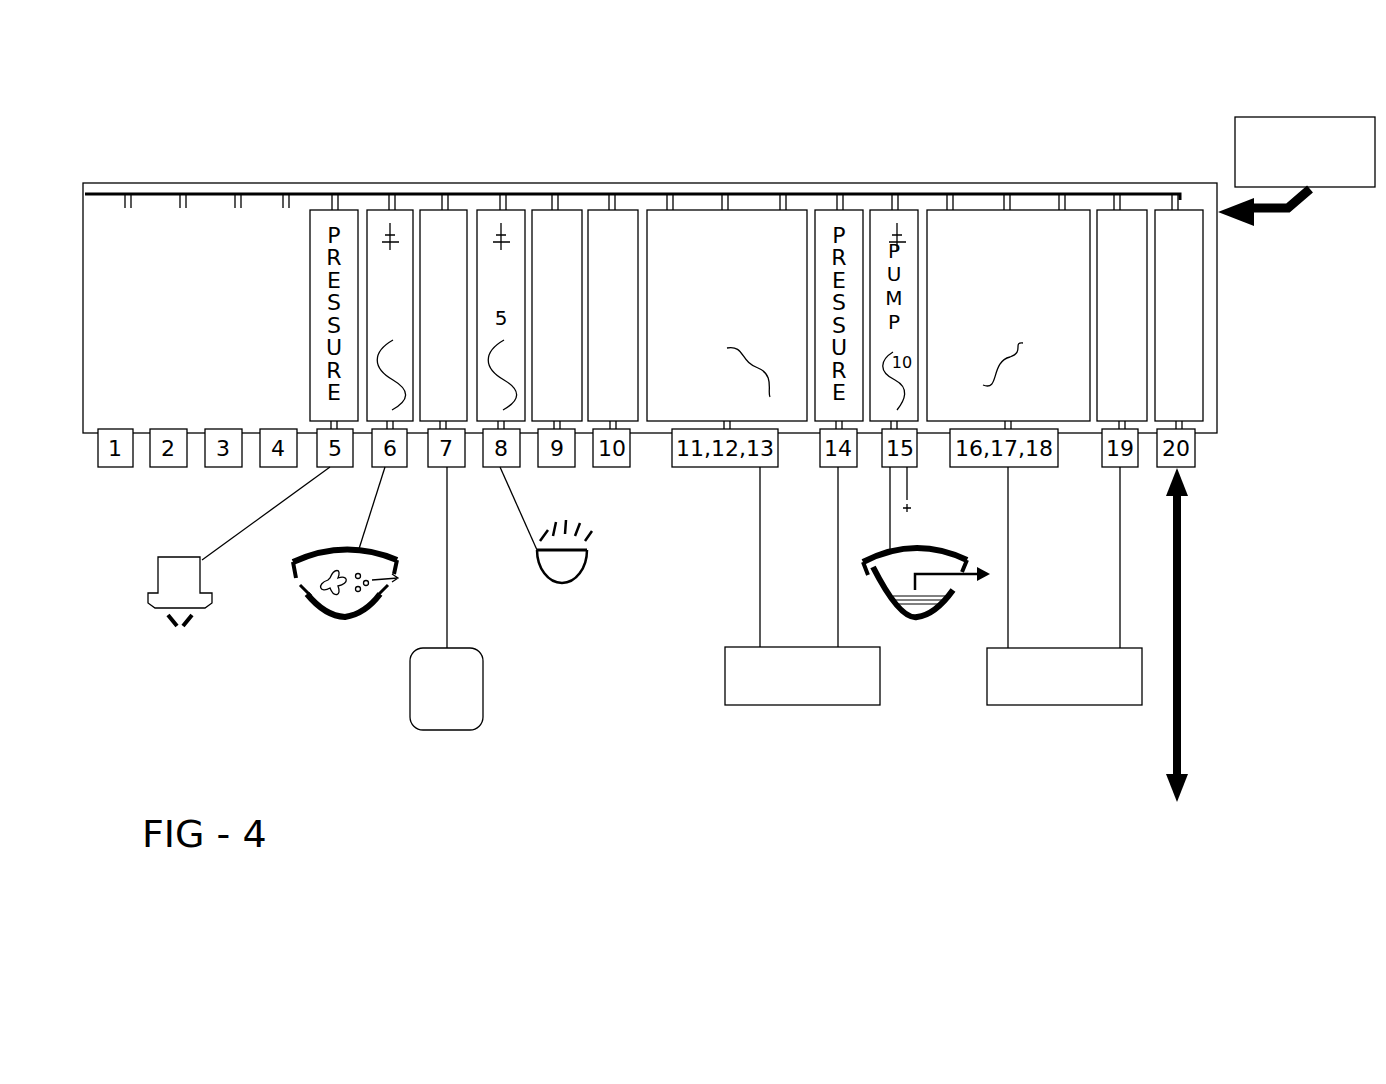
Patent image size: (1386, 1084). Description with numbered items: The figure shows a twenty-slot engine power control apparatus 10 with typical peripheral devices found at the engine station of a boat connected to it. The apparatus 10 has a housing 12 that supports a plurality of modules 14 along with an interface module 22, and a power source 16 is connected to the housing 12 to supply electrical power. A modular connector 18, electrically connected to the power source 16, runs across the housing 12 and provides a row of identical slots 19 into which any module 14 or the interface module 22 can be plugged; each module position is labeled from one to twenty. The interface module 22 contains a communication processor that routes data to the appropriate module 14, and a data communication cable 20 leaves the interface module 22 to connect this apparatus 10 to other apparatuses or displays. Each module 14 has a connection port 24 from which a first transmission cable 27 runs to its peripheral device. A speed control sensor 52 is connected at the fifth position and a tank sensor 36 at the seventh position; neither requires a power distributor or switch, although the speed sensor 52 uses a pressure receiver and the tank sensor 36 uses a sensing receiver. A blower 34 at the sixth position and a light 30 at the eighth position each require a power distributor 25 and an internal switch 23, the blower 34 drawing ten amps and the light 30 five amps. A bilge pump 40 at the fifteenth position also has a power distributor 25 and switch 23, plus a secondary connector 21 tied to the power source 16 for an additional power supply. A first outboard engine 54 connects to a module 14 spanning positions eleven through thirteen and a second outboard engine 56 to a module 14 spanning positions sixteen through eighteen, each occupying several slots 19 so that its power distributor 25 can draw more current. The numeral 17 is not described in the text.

The power control apparatus 10 is at (1250, 398).
The housing 12 is at (263, 183).
The modules 14 is at (699, 233).
The power source 16 is at (1247, 132).
The module connector 17 is at (407, 200).
The modular connector 18 is at (472, 188).
The slots 19 is at (212, 198).
The data communication cable 20 is at (1183, 615).
The secondary connector 21 is at (907, 500).
The interface module 22 is at (1188, 337).
The switch 23 is at (513, 228).
The connection port 24 is at (407, 431).
The power distributor 25 is at (955, 390).
The first transmission cable 27 is at (370, 510).
The light 30 is at (565, 567).
The blower 34 is at (297, 573).
The tank sensor 36 is at (455, 720).
The bilge pump 40 is at (897, 567).
The speed control sensor 52 is at (172, 570).
The first outboard engine 54 is at (770, 693).
The second outboard engine 56 is at (1025, 695).